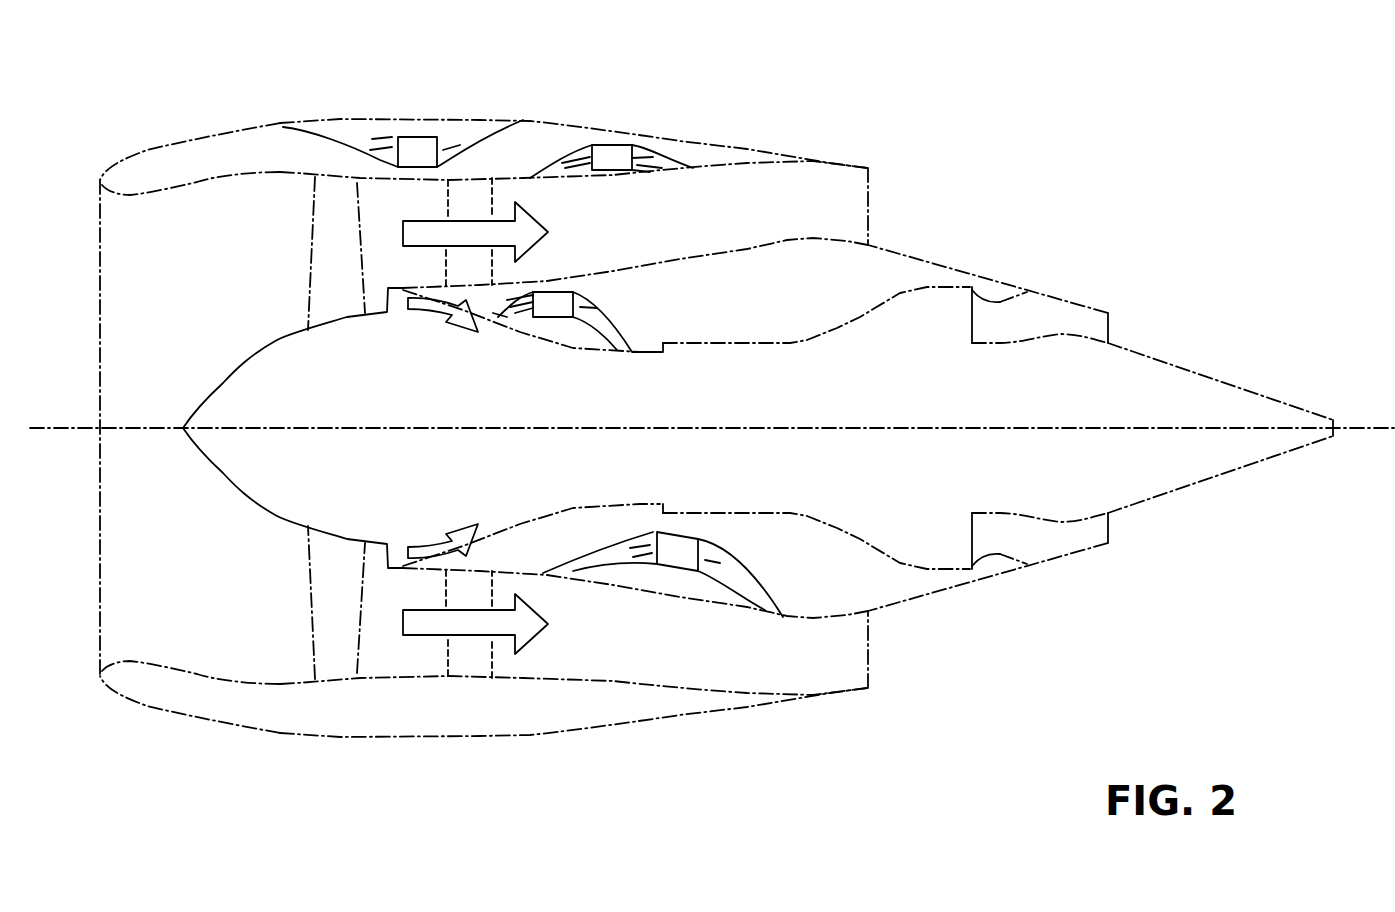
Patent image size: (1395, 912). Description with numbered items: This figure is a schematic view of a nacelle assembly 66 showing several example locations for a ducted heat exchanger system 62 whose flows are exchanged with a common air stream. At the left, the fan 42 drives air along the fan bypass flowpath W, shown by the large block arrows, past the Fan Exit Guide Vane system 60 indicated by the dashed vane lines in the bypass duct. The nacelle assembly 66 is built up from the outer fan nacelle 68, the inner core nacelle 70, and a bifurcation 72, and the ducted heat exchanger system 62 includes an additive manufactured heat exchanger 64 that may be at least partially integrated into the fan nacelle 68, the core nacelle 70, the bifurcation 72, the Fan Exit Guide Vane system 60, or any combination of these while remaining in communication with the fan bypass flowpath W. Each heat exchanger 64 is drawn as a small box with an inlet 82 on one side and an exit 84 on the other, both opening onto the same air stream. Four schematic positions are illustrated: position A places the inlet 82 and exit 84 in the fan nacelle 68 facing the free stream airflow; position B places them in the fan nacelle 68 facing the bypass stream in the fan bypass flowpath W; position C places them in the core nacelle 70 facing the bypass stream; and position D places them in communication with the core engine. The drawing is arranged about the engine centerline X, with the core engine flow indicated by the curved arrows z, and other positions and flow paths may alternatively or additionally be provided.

The fan 42 is at (343, 268).
The Fan Exit Guide Vane system 60 is at (462, 193).
The ducted heat exchanger system 62 is at (545, 107).
The additive manufactured heat exchanger 64 is at (420, 137).
The nacelle assembly 66 is at (1032, 182).
The fan nacelle 68 is at (866, 150).
The core nacelle 70 is at (1108, 292).
The bifurcation 72 is at (728, 663).
The inlet 82 is at (345, 133).
The exit 84 is at (485, 130).
The position A is at (405, 98).
The position B is at (667, 154).
The position C is at (727, 540).
The position D is at (613, 311).
The fan bypass flowpath W is at (535, 232).
The engine central axis X is at (1355, 428).
The core airflow z is at (430, 307).